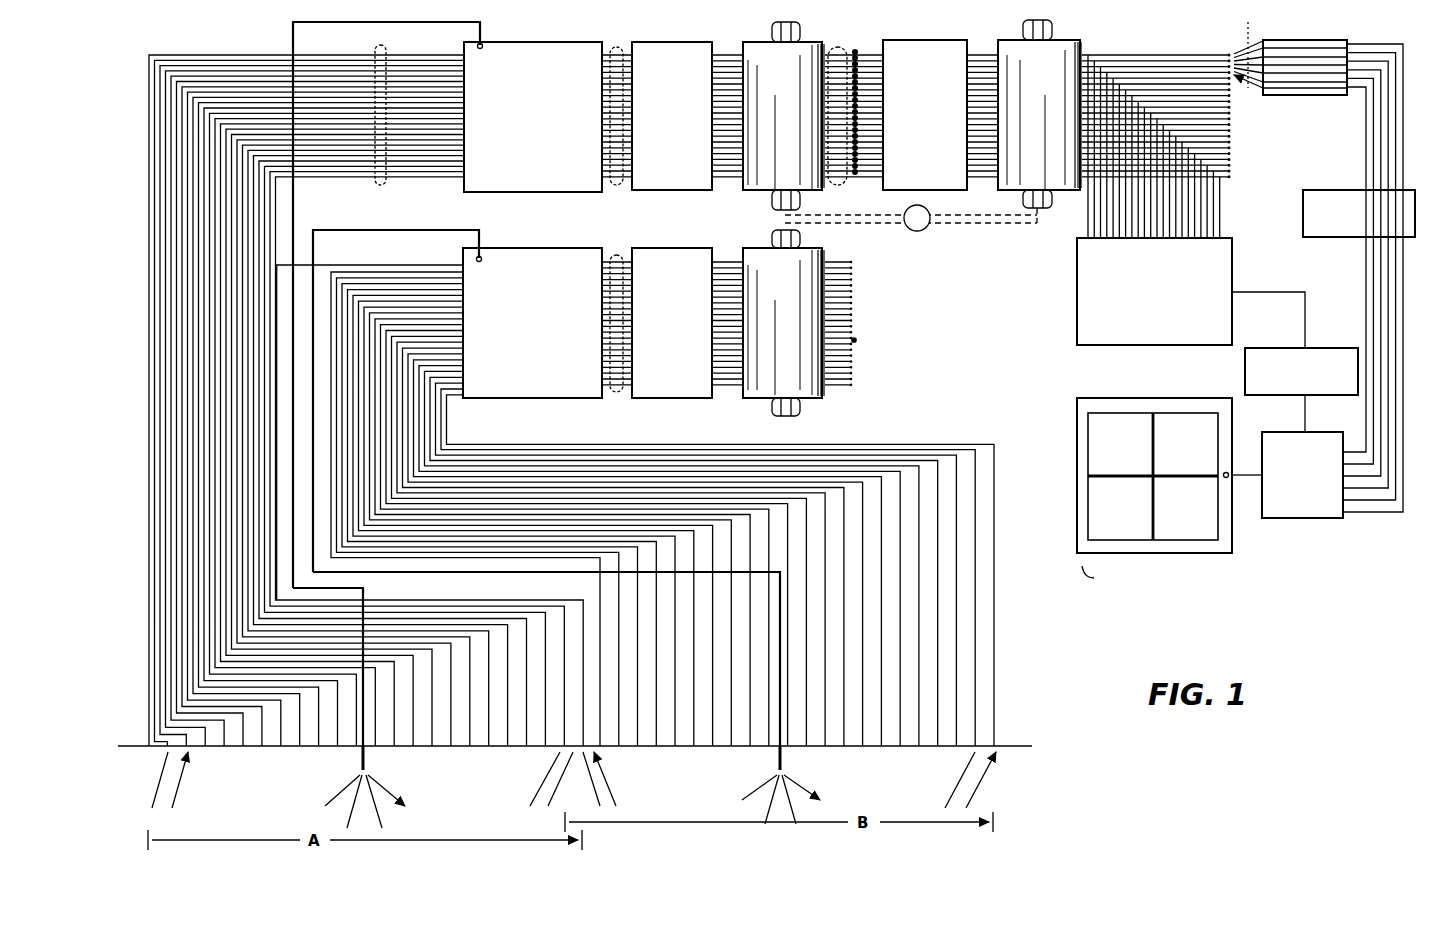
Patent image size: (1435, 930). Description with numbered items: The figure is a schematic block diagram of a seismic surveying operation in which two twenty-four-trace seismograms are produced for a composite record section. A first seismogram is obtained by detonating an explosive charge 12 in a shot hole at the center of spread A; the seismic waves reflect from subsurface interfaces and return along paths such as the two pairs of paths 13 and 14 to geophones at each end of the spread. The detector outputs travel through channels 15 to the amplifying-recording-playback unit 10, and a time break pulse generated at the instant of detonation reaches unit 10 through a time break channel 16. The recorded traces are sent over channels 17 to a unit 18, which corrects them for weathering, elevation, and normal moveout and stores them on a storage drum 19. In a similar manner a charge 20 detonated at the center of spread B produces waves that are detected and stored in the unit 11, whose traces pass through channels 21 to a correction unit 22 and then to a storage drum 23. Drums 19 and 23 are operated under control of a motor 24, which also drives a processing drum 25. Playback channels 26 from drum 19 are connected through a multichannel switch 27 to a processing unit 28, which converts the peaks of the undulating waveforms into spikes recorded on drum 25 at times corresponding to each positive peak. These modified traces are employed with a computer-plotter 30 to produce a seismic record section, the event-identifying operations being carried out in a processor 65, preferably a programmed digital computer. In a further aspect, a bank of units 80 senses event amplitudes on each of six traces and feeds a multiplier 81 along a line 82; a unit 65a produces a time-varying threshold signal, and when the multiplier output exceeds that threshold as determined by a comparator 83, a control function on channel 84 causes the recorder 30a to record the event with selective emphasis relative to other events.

The amplifying-recording-playback unit 10 is at (540, 42).
The recording unit 11 is at (548, 236).
The explosive charge 12 is at (366, 766).
The pair of paths 13 is at (190, 776).
The pair of paths 14 is at (556, 774).
The channels 15 is at (383, 185).
The time break channel 16 is at (398, 22).
The channels 17 is at (618, 45).
The correction unit 18 is at (680, 42).
The storage drum 19 is at (760, 34).
The charge 20 is at (784, 762).
The channels 21 is at (612, 246).
The correction unit 22 is at (680, 246).
The storage drum 23 is at (762, 246).
The motor 24 is at (922, 231).
The processing drum 25 is at (1058, 34).
The playback channels 26 is at (840, 45).
The multichannel switch 27 is at (858, 50).
The processing unit 28 is at (938, 40).
The computer-plotter 30 is at (1306, 140).
The recorder 30a is at (1077, 412).
The processor 65 is at (1232, 268).
The threshold unit 65a is at (1280, 348).
The bank of sensing units 80 is at (1320, 30).
The multiplier 81 is at (1340, 190).
The multiplier output line 82 is at (1366, 290).
The comparator 83 is at (1340, 518).
The channel 84 is at (1245, 480).